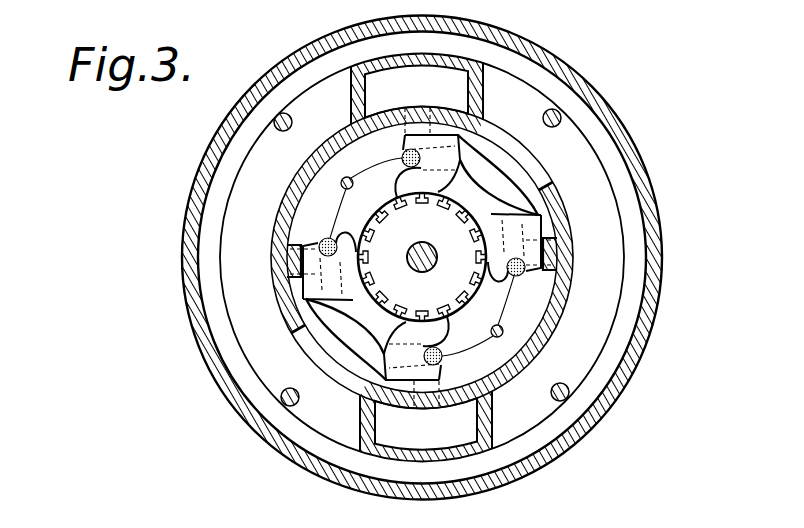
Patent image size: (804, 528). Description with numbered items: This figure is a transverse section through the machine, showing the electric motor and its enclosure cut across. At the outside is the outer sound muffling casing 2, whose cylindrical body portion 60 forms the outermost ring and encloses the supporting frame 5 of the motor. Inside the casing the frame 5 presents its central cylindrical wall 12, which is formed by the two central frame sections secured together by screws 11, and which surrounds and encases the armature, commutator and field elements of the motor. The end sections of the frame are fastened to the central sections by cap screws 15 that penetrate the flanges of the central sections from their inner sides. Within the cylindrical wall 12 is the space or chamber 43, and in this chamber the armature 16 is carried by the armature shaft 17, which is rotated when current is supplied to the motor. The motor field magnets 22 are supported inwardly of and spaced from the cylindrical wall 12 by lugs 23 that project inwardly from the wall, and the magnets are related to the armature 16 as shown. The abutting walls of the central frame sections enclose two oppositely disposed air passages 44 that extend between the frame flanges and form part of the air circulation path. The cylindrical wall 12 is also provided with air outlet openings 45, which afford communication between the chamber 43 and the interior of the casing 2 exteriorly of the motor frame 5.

The outer sound muffling casing 2 is at (662, 218).
The supporting frame 5 is at (220, 236).
The screws 11 is at (347, 190).
The central cylindrical wall 12 is at (567, 227).
The cap screws 15 is at (560, 121).
The armature 16 is at (422, 257).
The armature shaft 17 is at (414, 265).
The motor field magnets 22 is at (442, 182).
The lugs 23 is at (353, 122).
The chamber 43 is at (297, 173).
The air passages 44 is at (421, 257).
The air outlet openings 45 is at (531, 160).
The cylindrical body portion 60 is at (220, 385).